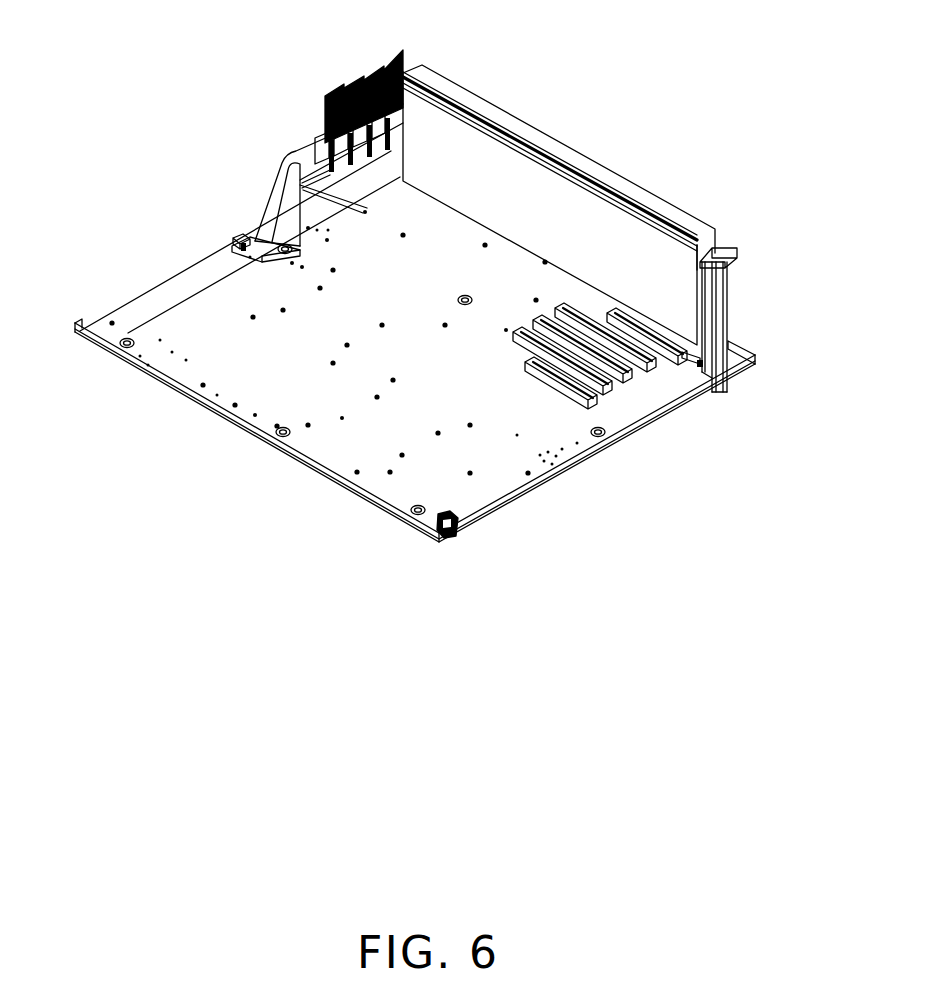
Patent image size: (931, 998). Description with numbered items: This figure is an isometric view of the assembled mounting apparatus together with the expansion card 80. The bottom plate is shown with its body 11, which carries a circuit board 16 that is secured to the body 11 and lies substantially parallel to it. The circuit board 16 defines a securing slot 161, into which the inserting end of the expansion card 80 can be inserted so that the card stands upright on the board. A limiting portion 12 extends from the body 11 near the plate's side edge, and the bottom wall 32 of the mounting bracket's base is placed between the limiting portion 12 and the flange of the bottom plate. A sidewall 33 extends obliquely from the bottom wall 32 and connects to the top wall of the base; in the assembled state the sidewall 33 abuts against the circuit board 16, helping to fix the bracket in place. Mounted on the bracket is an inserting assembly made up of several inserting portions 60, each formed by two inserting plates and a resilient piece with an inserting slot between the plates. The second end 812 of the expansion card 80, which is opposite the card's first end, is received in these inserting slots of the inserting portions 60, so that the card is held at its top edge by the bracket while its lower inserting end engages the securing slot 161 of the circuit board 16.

The body 11 is at (128, 316).
The limiting portion 12 is at (240, 236).
The circuit board 16 is at (494, 414).
The securing slot 161 is at (658, 338).
The bottom wall 32 is at (254, 238).
The sidewall 33 is at (290, 212).
The inserting portion 60 is at (405, 72).
The expansion card 80 is at (540, 183).
The second end 812 is at (398, 141).